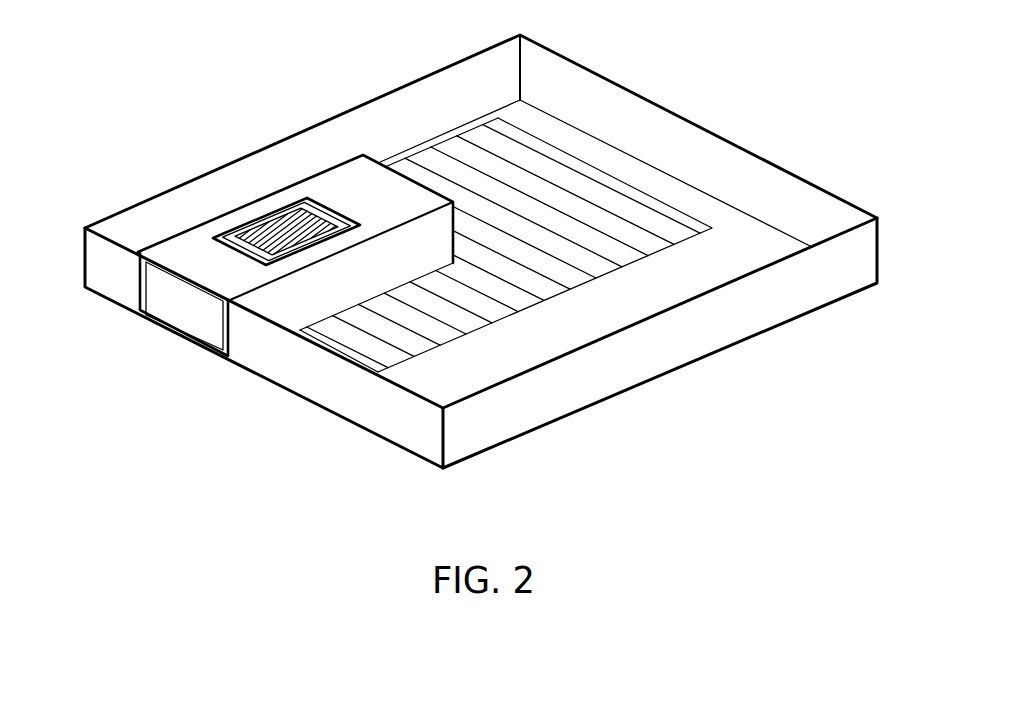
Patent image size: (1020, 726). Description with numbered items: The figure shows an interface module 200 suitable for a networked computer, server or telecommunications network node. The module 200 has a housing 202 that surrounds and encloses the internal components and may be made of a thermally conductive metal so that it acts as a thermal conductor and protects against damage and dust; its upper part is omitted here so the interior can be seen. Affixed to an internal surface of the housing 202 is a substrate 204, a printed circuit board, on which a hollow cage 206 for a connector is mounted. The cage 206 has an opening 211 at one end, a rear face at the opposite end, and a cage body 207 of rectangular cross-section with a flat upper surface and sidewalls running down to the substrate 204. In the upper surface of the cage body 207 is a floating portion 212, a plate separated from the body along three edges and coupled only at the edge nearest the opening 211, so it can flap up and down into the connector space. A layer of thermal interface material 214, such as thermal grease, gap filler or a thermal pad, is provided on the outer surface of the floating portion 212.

The interface module 200 is at (157, 137).
The housing 202 is at (704, 128).
The substrate 204 is at (472, 132).
The cage 206 is at (311, 305).
The cage body 207 is at (177, 247).
The opening 211 is at (186, 303).
The floating portion 212 is at (253, 222).
The thermal interface material 214 is at (297, 222).